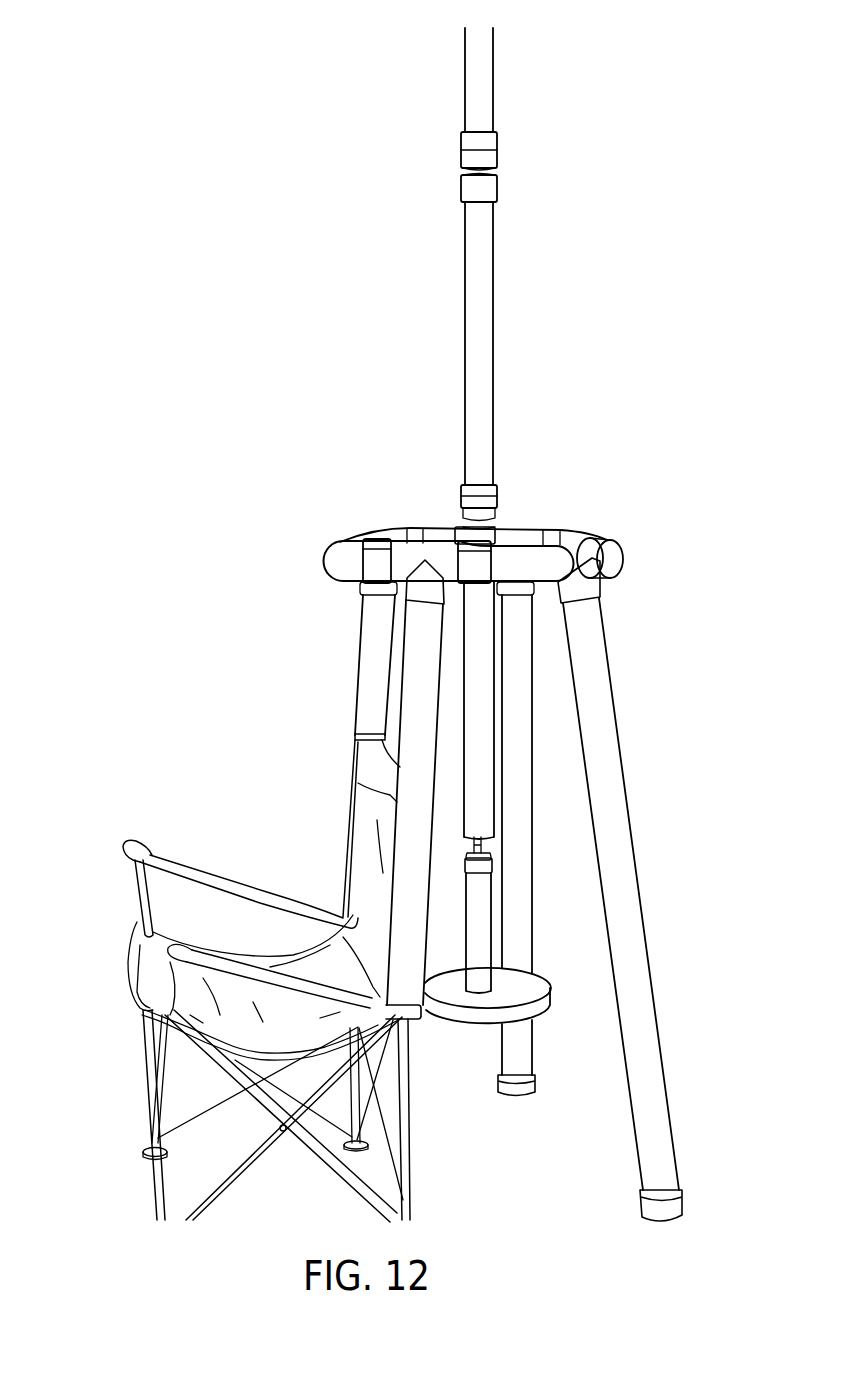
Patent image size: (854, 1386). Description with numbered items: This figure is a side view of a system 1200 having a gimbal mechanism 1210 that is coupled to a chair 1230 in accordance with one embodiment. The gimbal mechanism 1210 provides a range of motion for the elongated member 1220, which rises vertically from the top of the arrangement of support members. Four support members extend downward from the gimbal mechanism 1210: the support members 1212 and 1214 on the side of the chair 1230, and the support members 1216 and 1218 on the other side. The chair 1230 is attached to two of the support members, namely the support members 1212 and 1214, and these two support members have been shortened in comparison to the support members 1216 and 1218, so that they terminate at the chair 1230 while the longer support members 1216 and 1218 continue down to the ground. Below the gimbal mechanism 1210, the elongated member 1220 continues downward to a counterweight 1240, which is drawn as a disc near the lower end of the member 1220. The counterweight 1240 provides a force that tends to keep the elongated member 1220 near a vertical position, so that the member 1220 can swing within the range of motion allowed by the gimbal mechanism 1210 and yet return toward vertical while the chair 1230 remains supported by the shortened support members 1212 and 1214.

The umbrella support system 1200 is at (402, 625).
The tripod base 1210 is at (572, 524).
The support member 1212 is at (362, 613).
The support member 1214 is at (414, 681).
The support member 1216 is at (563, 911).
The support member 1218 is at (657, 1023).
The elongated member 1220 is at (494, 378).
The chair 1230 is at (418, 1134).
The counterweight 1240 is at (464, 1028).